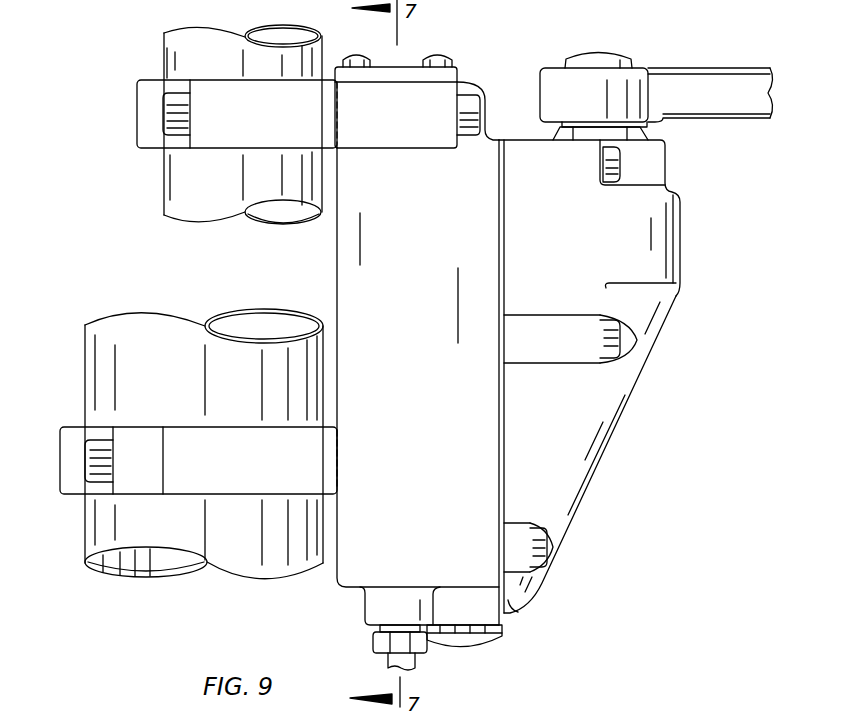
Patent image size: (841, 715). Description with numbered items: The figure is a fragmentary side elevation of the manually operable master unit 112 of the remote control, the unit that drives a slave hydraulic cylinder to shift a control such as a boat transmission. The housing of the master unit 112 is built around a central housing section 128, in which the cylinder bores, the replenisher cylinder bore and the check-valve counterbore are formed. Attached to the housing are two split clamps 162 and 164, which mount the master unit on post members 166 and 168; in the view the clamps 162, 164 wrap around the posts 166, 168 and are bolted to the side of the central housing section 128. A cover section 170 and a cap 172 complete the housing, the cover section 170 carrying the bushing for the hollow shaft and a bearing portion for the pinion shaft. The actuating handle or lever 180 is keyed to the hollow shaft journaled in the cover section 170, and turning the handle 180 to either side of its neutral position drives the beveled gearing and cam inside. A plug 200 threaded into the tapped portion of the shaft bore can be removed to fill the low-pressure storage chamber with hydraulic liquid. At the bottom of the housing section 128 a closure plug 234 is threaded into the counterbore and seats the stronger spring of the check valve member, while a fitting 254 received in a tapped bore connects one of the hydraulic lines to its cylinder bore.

The master unit 112 is at (594, 508).
The central housing section 128 is at (448, 393).
The split clamp 162 is at (150, 88).
The split clamp 164 is at (75, 455).
The post member 166 is at (183, 185).
The post member 168 is at (105, 535).
The cover section 170 is at (673, 272).
The cap 172 is at (402, 72).
The actuating handle 180 is at (722, 82).
The plug 200 is at (602, 56).
The closure plug 234 is at (467, 645).
The fitting 254 is at (378, 645).